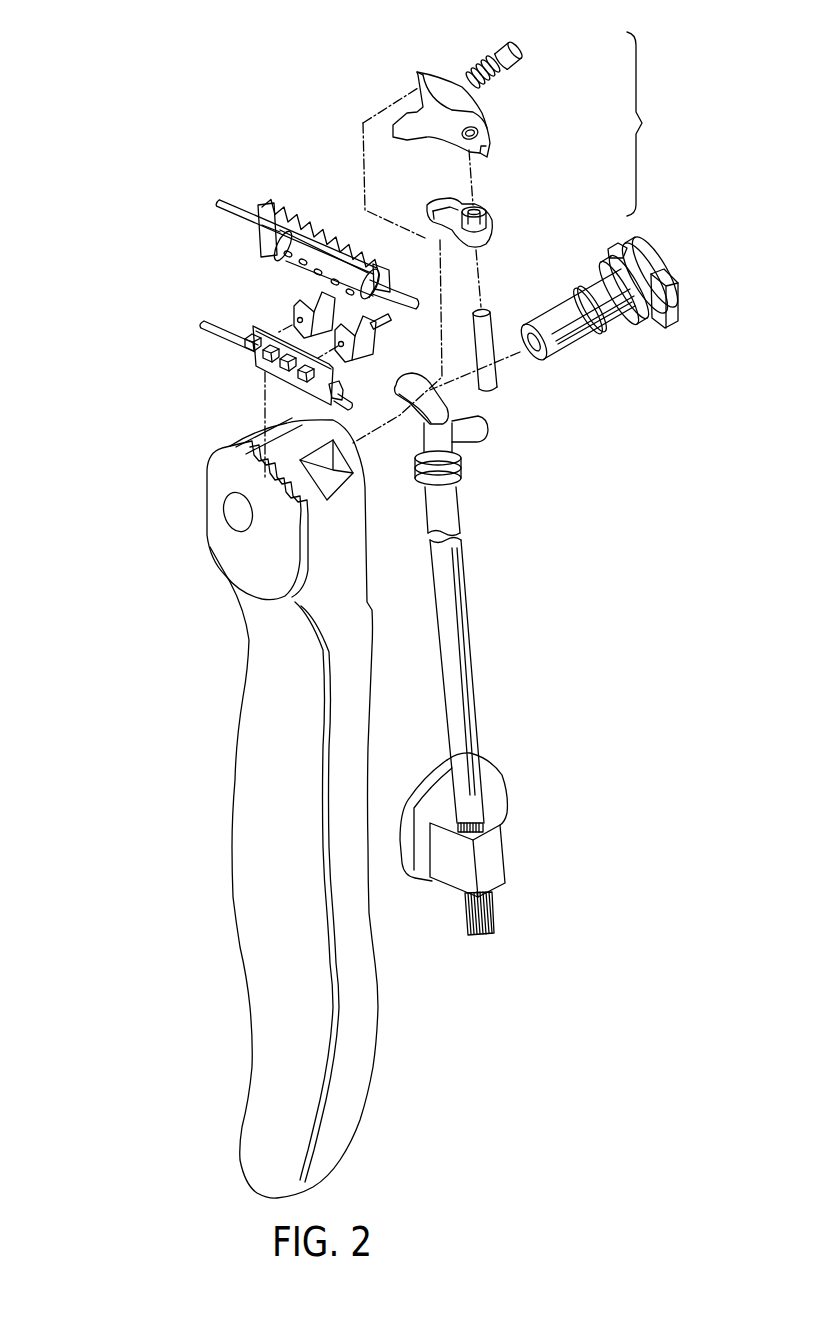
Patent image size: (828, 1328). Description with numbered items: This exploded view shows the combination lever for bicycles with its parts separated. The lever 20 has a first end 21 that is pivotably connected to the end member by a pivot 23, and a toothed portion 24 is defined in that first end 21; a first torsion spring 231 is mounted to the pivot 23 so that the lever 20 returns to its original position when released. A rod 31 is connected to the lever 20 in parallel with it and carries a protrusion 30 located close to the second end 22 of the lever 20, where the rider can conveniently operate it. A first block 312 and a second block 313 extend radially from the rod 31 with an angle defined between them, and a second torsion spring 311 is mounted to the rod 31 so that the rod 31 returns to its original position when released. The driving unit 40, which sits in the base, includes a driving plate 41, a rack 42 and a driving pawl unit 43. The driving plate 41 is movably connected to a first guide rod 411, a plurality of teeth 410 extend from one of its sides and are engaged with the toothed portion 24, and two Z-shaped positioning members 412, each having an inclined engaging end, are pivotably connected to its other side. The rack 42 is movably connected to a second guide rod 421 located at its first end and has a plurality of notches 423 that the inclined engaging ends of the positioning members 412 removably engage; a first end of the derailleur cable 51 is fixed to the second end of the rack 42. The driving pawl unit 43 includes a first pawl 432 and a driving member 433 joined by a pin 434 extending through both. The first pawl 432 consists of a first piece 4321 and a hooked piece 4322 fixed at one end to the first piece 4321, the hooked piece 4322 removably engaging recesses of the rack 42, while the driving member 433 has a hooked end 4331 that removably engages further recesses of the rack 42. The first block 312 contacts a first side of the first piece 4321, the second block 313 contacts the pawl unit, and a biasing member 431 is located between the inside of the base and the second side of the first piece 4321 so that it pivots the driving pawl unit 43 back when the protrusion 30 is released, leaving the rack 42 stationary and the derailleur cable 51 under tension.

The lever 20 is at (318, 1053).
The first end 21 is at (280, 440).
The second end 22 is at (262, 1109).
The pivot 23 is at (610, 327).
The first torsion spring 231 is at (640, 328).
The toothed portion 24 is at (253, 483).
The protrusion 30 is at (492, 795).
The rod 31 is at (450, 662).
The second torsion spring 311 is at (458, 472).
The first block 312 is at (413, 392).
The second block 313 is at (480, 437).
The driving unit 40 is at (160, 113).
The driving plate 41 is at (263, 367).
The teeth 410 is at (248, 345).
The first guide rod 411 is at (243, 337).
The Z-shaped positioning members 412 is at (293, 318).
The rack 42 is at (297, 205).
The second guide rod 421 is at (233, 215).
The notches 423 is at (262, 255).
The driving pawl unit 43 is at (650, 124).
The biasing member 431 is at (520, 58).
The first pawl 432 is at (473, 112).
The first piece 4321 is at (420, 70).
The hooked piece 4322 is at (405, 114).
The driving member 433 is at (453, 202).
The hooked end 4331 is at (427, 215).
The pin 434 is at (485, 310).
The derailleur cable 51 is at (400, 298).